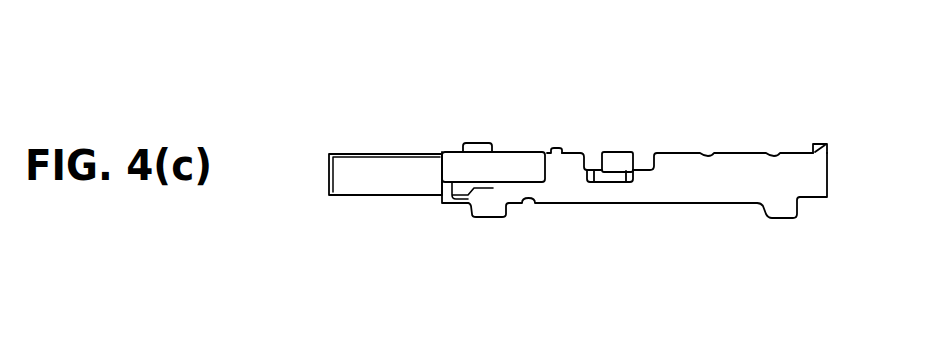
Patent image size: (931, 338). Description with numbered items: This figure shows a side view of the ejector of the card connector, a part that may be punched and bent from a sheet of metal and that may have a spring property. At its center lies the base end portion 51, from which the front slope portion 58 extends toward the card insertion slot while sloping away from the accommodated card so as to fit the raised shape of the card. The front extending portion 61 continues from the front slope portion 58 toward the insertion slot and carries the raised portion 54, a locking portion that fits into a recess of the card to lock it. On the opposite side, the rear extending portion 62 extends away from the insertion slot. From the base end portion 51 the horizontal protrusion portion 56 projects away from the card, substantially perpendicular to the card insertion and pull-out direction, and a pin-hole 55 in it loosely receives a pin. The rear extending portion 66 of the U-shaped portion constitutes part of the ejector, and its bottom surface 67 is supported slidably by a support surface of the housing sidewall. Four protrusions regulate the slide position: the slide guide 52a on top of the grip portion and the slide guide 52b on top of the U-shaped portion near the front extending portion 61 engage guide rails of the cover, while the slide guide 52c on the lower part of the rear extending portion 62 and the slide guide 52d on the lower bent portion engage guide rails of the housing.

The base end portion 51 is at (632, 192).
The slide guide 52a is at (818, 150).
The slide guide 52b is at (478, 143).
The slide guide 52c is at (782, 208).
The slide guide 52d is at (497, 205).
The raised portion 54 is at (388, 160).
The pin-hole 55 is at (612, 187).
The horizontal protrusion portion 56 is at (608, 175).
The front slope portion 58 is at (567, 186).
The front extending portion 61 is at (360, 172).
The rear extending portion 62 is at (692, 170).
The rear extending portion of the U-shaped portion 66 is at (513, 163).
The bottom surface 67 is at (517, 187).